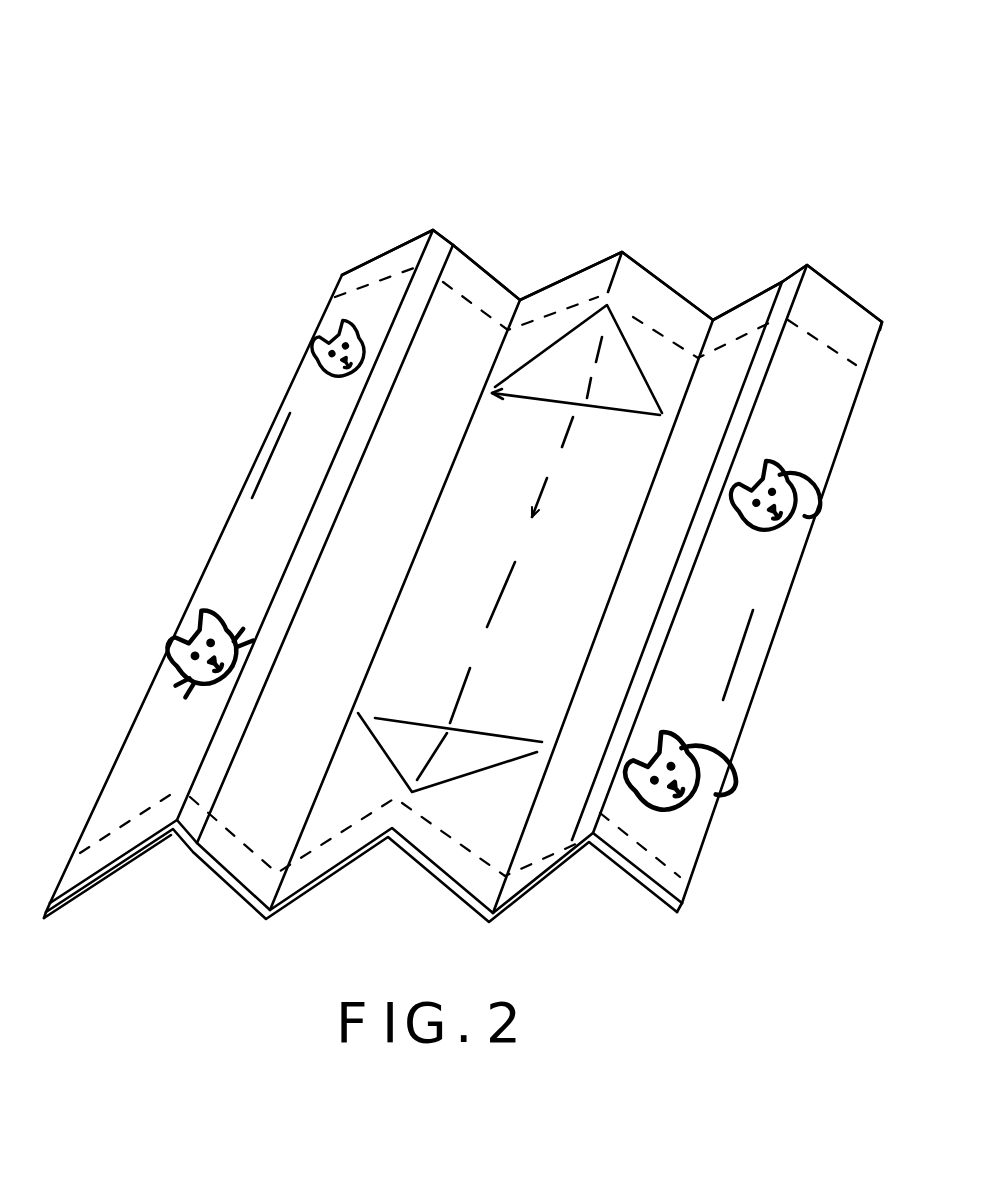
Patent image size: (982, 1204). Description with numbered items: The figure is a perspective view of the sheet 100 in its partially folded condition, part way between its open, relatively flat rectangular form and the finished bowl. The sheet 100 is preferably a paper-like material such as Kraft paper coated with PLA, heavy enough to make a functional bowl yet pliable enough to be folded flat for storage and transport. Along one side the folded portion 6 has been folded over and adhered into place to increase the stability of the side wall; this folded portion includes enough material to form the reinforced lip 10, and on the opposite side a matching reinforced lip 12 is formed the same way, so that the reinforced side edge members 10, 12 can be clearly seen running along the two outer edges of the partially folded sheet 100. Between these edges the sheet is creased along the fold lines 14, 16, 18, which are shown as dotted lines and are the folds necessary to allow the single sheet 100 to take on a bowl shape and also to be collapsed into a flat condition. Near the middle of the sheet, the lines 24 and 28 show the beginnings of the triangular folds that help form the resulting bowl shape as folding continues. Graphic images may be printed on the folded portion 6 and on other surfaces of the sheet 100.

The sheet 100 is at (880, 155).
The folded portion 6 is at (294, 396).
The reinforced lip 10 is at (270, 627).
The reinforced lip 12 is at (785, 280).
The fold line 14 is at (521, 290).
The fold line 16 is at (622, 240).
The fold line 18 is at (712, 315).
The fold line 24 is at (623, 347).
The line of triangular fold 28 is at (443, 790).